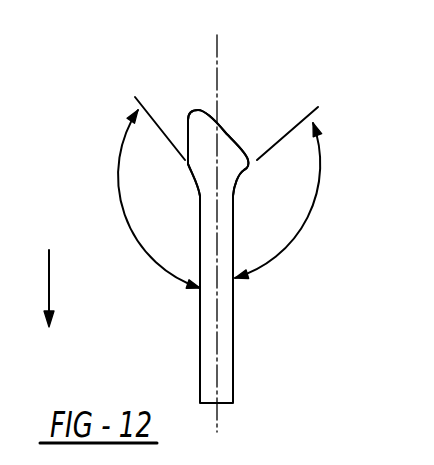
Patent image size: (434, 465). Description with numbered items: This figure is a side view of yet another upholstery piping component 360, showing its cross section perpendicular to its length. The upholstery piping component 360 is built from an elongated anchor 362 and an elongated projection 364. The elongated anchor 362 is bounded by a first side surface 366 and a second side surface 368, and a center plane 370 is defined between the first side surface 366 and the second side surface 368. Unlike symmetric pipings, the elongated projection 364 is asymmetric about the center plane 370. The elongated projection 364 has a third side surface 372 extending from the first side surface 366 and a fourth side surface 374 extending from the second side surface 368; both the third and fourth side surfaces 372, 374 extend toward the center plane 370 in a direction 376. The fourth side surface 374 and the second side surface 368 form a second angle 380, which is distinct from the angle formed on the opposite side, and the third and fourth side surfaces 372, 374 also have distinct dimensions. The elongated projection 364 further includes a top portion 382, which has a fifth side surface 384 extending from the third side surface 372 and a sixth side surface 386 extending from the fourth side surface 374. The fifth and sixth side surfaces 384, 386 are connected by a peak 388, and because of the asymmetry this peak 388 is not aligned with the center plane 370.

The upholstery piping component 360 is at (83, 123).
The elongated anchor 362 is at (225, 360).
The elongated projection 364 is at (198, 157).
The first side surface 366 is at (200, 312).
The second side surface 368 is at (234, 312).
The center plane 370 is at (217, 57).
The third side surface 372 is at (196, 178).
The fourth side surface 374 is at (244, 171).
The direction 376 is at (50, 292).
The second angle 380 is at (320, 165).
The top portion 382 is at (201, 131).
The fifth side surface 384 is at (183, 128).
The sixth side surface 386 is at (242, 168).
The peak 388 is at (197, 127).